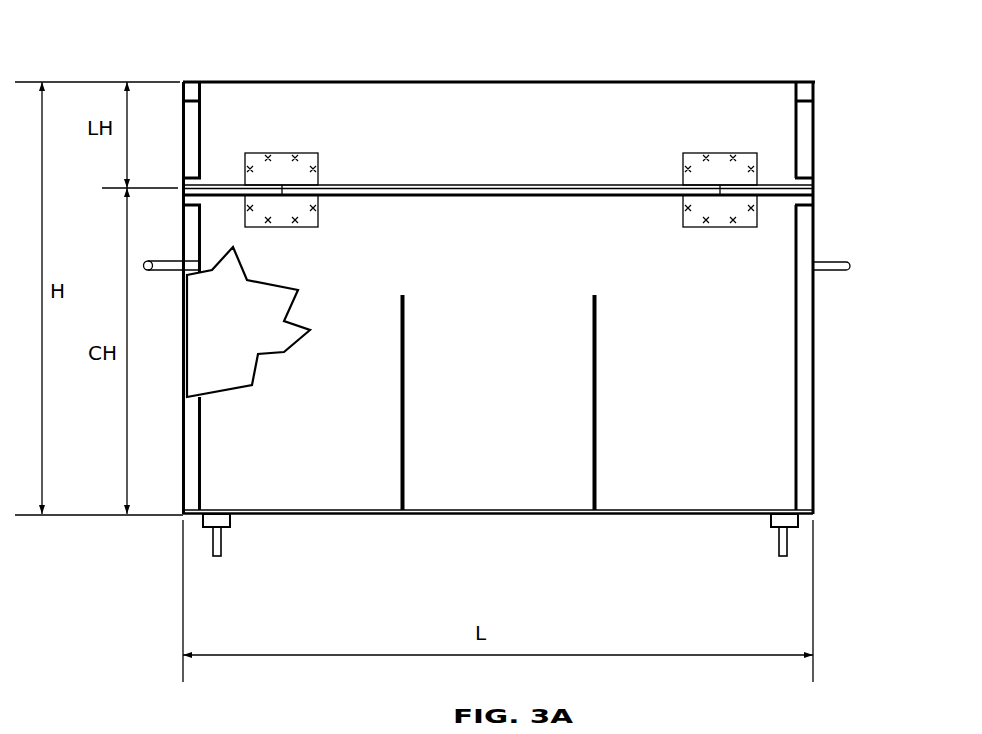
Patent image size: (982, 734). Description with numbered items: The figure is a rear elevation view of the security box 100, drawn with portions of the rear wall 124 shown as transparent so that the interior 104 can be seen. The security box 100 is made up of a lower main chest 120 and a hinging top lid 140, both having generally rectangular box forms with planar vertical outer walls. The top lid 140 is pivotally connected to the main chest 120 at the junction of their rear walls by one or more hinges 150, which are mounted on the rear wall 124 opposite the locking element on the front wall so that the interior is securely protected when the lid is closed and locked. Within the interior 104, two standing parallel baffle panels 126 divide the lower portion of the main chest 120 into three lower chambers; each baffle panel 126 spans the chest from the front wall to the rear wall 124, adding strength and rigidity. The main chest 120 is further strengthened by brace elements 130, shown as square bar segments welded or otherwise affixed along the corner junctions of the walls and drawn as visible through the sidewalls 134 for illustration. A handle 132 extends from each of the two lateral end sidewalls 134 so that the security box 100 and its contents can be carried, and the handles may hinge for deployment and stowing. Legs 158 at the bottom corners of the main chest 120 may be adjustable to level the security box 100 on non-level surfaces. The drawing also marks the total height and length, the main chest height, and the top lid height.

The security box 100 is at (306, 66).
The interior 104 is at (500, 298).
The lower main chest 120 is at (822, 367).
The rear wall 124 is at (243, 337).
The baffle panel 126 is at (404, 405).
The brace element 130 is at (193, 462).
The handle 132 is at (155, 262).
The sidewall 134 is at (815, 465).
The top lid 140 is at (823, 137).
The hinge 150 is at (318, 160).
The leg 158 is at (222, 527).